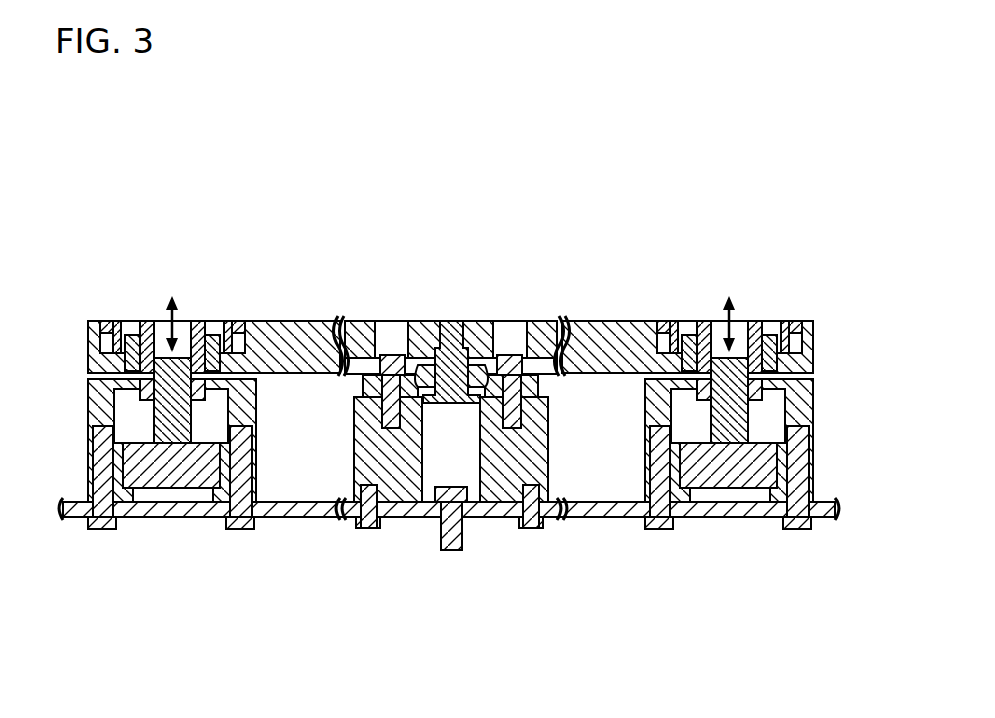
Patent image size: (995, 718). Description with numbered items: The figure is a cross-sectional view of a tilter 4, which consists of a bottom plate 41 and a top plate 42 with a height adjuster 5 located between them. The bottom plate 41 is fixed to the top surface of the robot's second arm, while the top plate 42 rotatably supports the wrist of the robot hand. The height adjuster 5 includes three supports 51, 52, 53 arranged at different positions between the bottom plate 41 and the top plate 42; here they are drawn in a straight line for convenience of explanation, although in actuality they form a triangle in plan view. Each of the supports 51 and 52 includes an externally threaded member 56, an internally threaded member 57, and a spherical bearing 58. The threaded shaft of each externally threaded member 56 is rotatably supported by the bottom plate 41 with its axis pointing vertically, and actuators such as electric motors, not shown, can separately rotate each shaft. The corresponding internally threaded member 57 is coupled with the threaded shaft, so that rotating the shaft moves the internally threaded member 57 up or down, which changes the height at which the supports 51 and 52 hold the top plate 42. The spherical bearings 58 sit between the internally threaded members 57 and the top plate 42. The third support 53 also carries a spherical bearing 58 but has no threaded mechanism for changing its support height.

The tilter 4 is at (562, 212).
The height adjuster 5 is at (472, 543).
The bottom plate 41 is at (757, 508).
The top plate 42 is at (280, 325).
The support 51 is at (187, 298).
The support 52 is at (745, 298).
The support 53 is at (457, 298).
The externally threaded member 56 is at (182, 435).
The internally threaded member 57 is at (197, 393).
The spherical bearing 58 is at (142, 327).